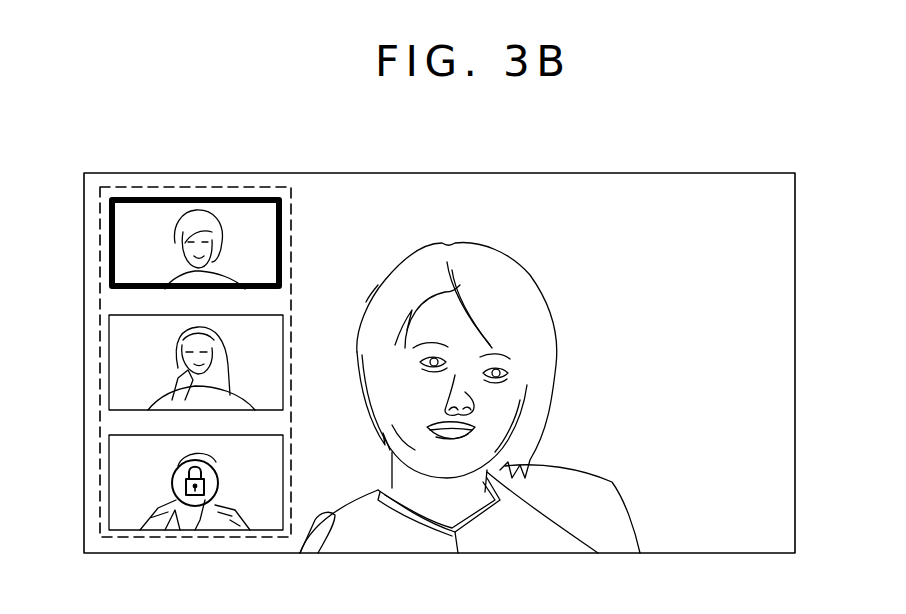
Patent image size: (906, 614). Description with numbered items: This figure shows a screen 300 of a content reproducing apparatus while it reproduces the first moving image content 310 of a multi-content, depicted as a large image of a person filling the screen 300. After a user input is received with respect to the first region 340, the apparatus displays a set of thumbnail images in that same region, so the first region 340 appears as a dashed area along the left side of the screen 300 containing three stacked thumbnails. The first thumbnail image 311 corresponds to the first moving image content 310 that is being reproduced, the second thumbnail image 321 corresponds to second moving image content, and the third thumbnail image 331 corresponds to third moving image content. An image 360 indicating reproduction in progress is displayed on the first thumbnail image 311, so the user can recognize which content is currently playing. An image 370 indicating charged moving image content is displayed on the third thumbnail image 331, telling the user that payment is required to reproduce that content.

The screen 300 is at (438, 173).
The first moving image content 310 is at (665, 533).
The first thumbnail image 311 is at (120, 240).
The second thumbnail image 321 is at (120, 363).
The third thumbnail image 331 is at (120, 483).
The first region 340 is at (193, 187).
The image indicating reproduction in progress 360 is at (265, 197).
The image indicating charged moving image content 370 is at (108, 521).